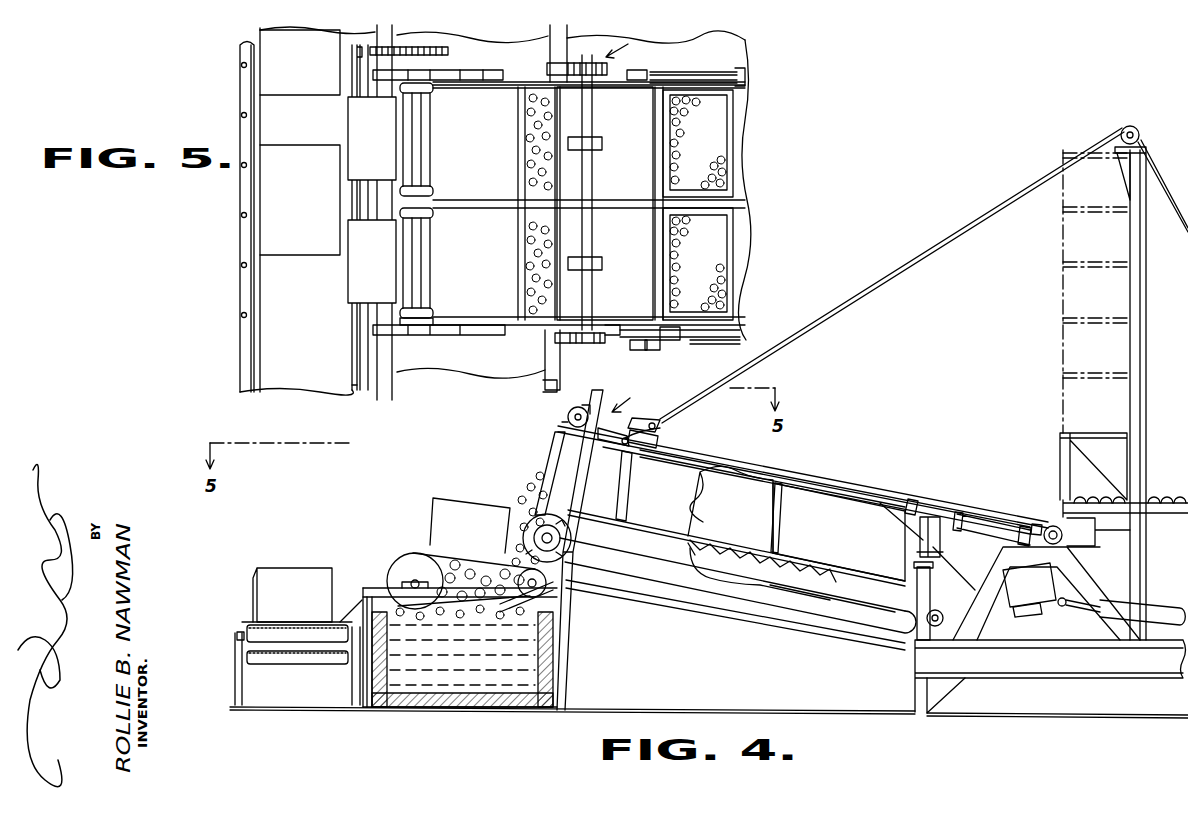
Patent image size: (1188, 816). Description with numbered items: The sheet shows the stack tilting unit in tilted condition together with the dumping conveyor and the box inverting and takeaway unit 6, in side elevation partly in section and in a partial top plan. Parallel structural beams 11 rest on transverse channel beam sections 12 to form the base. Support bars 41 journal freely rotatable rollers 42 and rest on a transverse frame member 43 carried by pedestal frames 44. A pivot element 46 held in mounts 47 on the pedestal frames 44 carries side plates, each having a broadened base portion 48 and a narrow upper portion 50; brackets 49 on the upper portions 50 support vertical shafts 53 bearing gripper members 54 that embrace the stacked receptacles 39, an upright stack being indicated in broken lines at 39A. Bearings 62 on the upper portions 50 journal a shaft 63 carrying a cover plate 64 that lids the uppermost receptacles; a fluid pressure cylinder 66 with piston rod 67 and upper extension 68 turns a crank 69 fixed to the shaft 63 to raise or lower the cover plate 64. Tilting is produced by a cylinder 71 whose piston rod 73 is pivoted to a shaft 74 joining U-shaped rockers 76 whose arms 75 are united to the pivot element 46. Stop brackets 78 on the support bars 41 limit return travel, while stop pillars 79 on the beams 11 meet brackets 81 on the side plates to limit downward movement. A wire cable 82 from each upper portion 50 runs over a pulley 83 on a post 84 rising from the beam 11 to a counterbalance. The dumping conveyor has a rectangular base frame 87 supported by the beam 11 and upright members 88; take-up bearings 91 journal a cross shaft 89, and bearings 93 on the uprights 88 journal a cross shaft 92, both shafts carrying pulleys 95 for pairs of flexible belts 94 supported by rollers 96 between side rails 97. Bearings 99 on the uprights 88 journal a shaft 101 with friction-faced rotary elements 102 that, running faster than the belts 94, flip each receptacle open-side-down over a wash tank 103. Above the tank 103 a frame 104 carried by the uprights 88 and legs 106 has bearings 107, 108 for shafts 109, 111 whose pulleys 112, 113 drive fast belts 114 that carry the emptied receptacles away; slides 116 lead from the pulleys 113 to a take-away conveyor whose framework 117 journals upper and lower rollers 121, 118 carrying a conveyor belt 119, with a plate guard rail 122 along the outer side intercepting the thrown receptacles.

In FIG. 5, the box inverting and takeaway unit 6 is at (619, 45).
In FIG. 4, the box inverting and takeaway unit 6 is at (624, 399).
In FIG. 4, the structural beams 11 is at (1094, 668).
In FIG. 4, the channel beam section 12 is at (924, 697).
In FIG. 4, the receptacles 39 is at (755, 511).
In FIG. 4, the tower 39A is at (1060, 273).
In FIG. 4, the support bars 41 is at (1168, 512).
In FIG. 4, the rollers 42 is at (1158, 500).
In FIG. 4, the frame member 43 is at (1082, 526).
In FIG. 4, the pedestal frames 44 is at (1080, 585).
In FIG. 4, the pivot element 46 is at (1038, 526).
In FIG. 4, the mounts 47 is at (1054, 525).
In FIG. 4, the base portion 48 is at (908, 492).
In FIG. 5, the brackets 49 is at (638, 72).
In FIG. 4, the upper portion 50 is at (823, 478).
In FIG. 5, the shafts 53 is at (728, 80).
In FIG. 5, the gripper members 54 is at (716, 340).
In FIG. 4, the gripper members 54 is at (854, 516).
In FIG. 5, the bearings 62 is at (670, 342).
In FIG. 4, the bearings 62 is at (680, 414).
In FIG. 5, the shaft 63 is at (663, 350).
In FIG. 4, the shaft 63 is at (675, 425).
In FIG. 5, the cover plate 64 is at (612, 315).
In FIG. 4, the cover plate 64 is at (606, 432).
In FIG. 4, the fluid pressure cylinder 66 is at (973, 512).
In FIG. 4, the piston rod 67 is at (920, 505).
In FIG. 5, the upper extension 68 is at (698, 345).
In FIG. 4, the upper extension 68 is at (791, 472).
In FIG. 5, the crank 69 is at (650, 350).
In FIG. 4, the crank 69 is at (660, 440).
In FIG. 4, the cylinder 71 is at (1150, 608).
In FIG. 4, the piston rod 73 is at (1072, 610).
In FIG. 4, the shaft 74 is at (1060, 608).
In FIG. 4, the arms 75 is at (1058, 580).
In FIG. 4, the rockers 76 is at (1016, 616).
In FIG. 4, the stop brackets 78 is at (1073, 438).
In FIG. 4, the stop pillars 79 is at (918, 572).
In FIG. 4, the brackets 81 is at (922, 535).
In FIG. 4, the wire cable 82 is at (1047, 175).
In FIG. 4, the pulley 83 is at (1139, 131).
In FIG. 4, the post 84 is at (1148, 328).
In FIG. 4, the base frame 87 is at (646, 582).
In FIG. 4, the upright structural members 88 is at (548, 586).
In FIG. 4, the cross shaft 89 is at (908, 634).
In FIG. 4, the take-up bearings 91 is at (928, 625).
In FIG. 4, the cross shaft 92 is at (572, 540).
In FIG. 4, the bearings 93 is at (568, 558).
In FIG. 4, the conveyor belts 94 is at (788, 571).
In FIG. 4, the pulleys 95 is at (905, 628).
In FIG. 4, the rollers 96 is at (752, 558).
In FIG. 4, the side rails 97 is at (846, 578).
In FIG. 4, the bearings 99 is at (589, 398).
In FIG. 5, the shaft 101 is at (593, 224).
In FIG. 4, the shaft 101 is at (569, 414).
In FIG. 5, the rotary elements 102 is at (595, 262).
In FIG. 4, the rotary elements 102 is at (562, 425).
In FIG. 4, the wash tank 103 is at (549, 683).
In FIG. 5, the frame 104 is at (463, 336).
In FIG. 4, the frame 104 is at (375, 588).
In FIG. 4, the legs 106 is at (364, 707).
In FIG. 4, the bearings 107 is at (545, 593).
In FIG. 5, the bearings 108 is at (436, 327).
In FIG. 4, the bearings 108 is at (404, 580).
In FIG. 4, the shaft 109 is at (548, 603).
In FIG. 4, the shaft 111 is at (413, 579).
In FIG. 4, the pulleys 112 is at (566, 578).
In FIG. 5, the pulleys 113 is at (416, 200).
In FIG. 4, the pulleys 113 is at (418, 562).
In FIG. 5, the conveyor belts 114 is at (435, 88).
In FIG. 4, the conveyor belts 114 is at (426, 552).
In FIG. 5, the slides 116 is at (372, 200).
In FIG. 4, the slides 116 is at (352, 614).
In FIG. 5, the structural framework 117 is at (365, 390).
In FIG. 4, the structural framework 117 is at (353, 680).
In FIG. 4, the lower rollers 118 is at (268, 654).
In FIG. 5, the conveyor belt 119 is at (330, 390).
In FIG. 4, the conveyor belt 119 is at (238, 636).
In FIG. 4, the upper rollers 121 is at (311, 637).
In FIG. 5, the plate guard rail 122 is at (243, 287).
In FIG. 4, the plate guard rail 122 is at (252, 596).